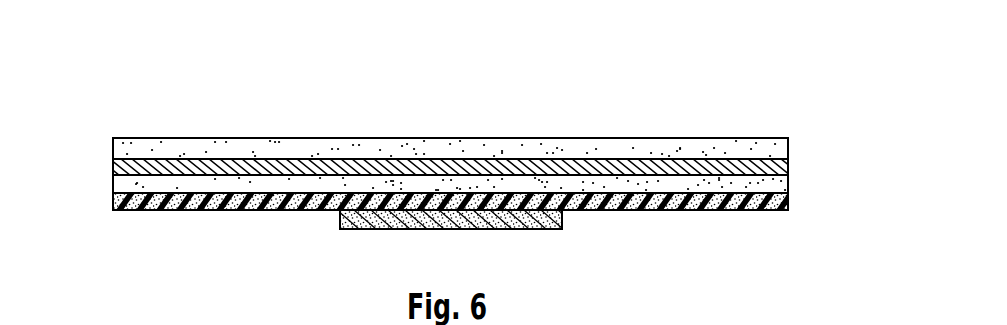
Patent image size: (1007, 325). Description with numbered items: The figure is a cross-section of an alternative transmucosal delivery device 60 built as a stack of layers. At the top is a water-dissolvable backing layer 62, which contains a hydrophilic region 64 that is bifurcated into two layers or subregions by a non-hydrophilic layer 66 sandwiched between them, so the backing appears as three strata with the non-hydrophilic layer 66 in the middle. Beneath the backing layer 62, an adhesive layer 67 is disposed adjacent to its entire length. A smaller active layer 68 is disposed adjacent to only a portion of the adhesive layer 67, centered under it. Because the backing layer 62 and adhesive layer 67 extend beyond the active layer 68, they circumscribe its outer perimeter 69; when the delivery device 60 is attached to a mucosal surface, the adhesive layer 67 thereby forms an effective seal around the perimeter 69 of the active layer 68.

The transmucosal delivery device 60 is at (690, 92).
The backing layer 62 is at (798, 135).
The hydrophilic region 64 is at (113, 148).
The non-hydrophilic layer 66 is at (210, 166).
The adhesive layer 67 is at (733, 210).
The active layer 68 is at (530, 229).
The outer perimeter 69 is at (340, 222).